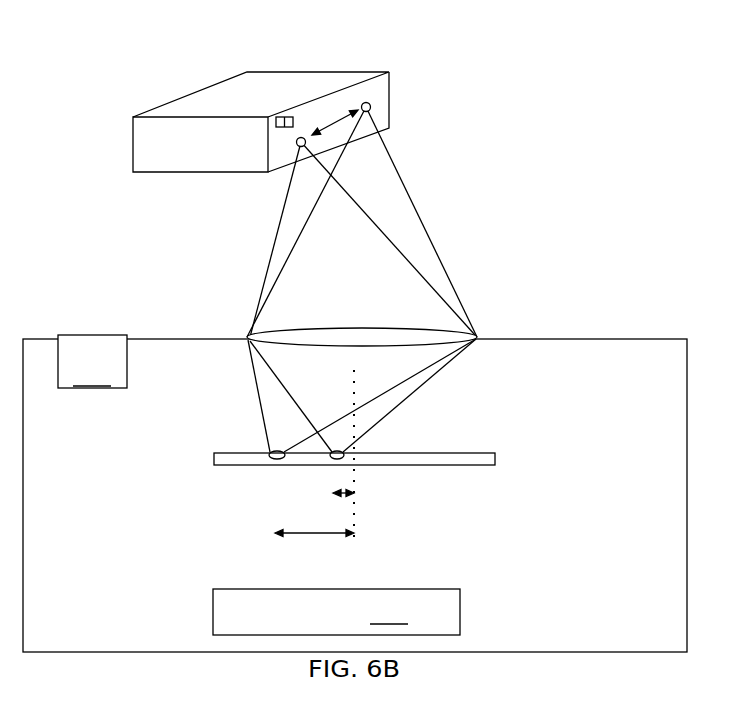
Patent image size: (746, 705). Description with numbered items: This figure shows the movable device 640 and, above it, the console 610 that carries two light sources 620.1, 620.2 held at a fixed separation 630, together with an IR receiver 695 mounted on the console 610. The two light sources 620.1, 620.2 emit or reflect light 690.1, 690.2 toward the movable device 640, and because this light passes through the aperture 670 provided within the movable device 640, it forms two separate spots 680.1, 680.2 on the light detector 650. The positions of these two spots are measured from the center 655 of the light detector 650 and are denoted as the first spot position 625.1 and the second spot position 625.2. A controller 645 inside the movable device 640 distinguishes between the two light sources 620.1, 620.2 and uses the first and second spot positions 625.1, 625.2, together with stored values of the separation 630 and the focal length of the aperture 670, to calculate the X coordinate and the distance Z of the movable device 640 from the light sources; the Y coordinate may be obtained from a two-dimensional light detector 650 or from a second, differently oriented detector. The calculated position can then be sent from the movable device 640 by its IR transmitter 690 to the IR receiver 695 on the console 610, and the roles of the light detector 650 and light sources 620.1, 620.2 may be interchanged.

The console 610 is at (268, 72).
The IR receiver 695 is at (285, 116).
The separation S_L 630 is at (328, 93).
The first light source 620.1 is at (368, 101).
The second light source 620.2 is at (291, 140).
The light from first light source 690.1 is at (389, 162).
The light from second light source 690.2 is at (278, 229).
The movable device 640 is at (582, 339).
The aperture 670 is at (457, 330).
The IR transmitter 690 is at (92, 361).
The first spot 680.1 is at (268, 450).
The second spot 680.2 is at (328, 447).
The light detector 650 is at (497, 448).
The center of the light detector 655 is at (356, 476).
The spot position x1 625.1 is at (332, 512).
The spot position x2 625.2 is at (300, 555).
The controller 645 is at (336, 612).